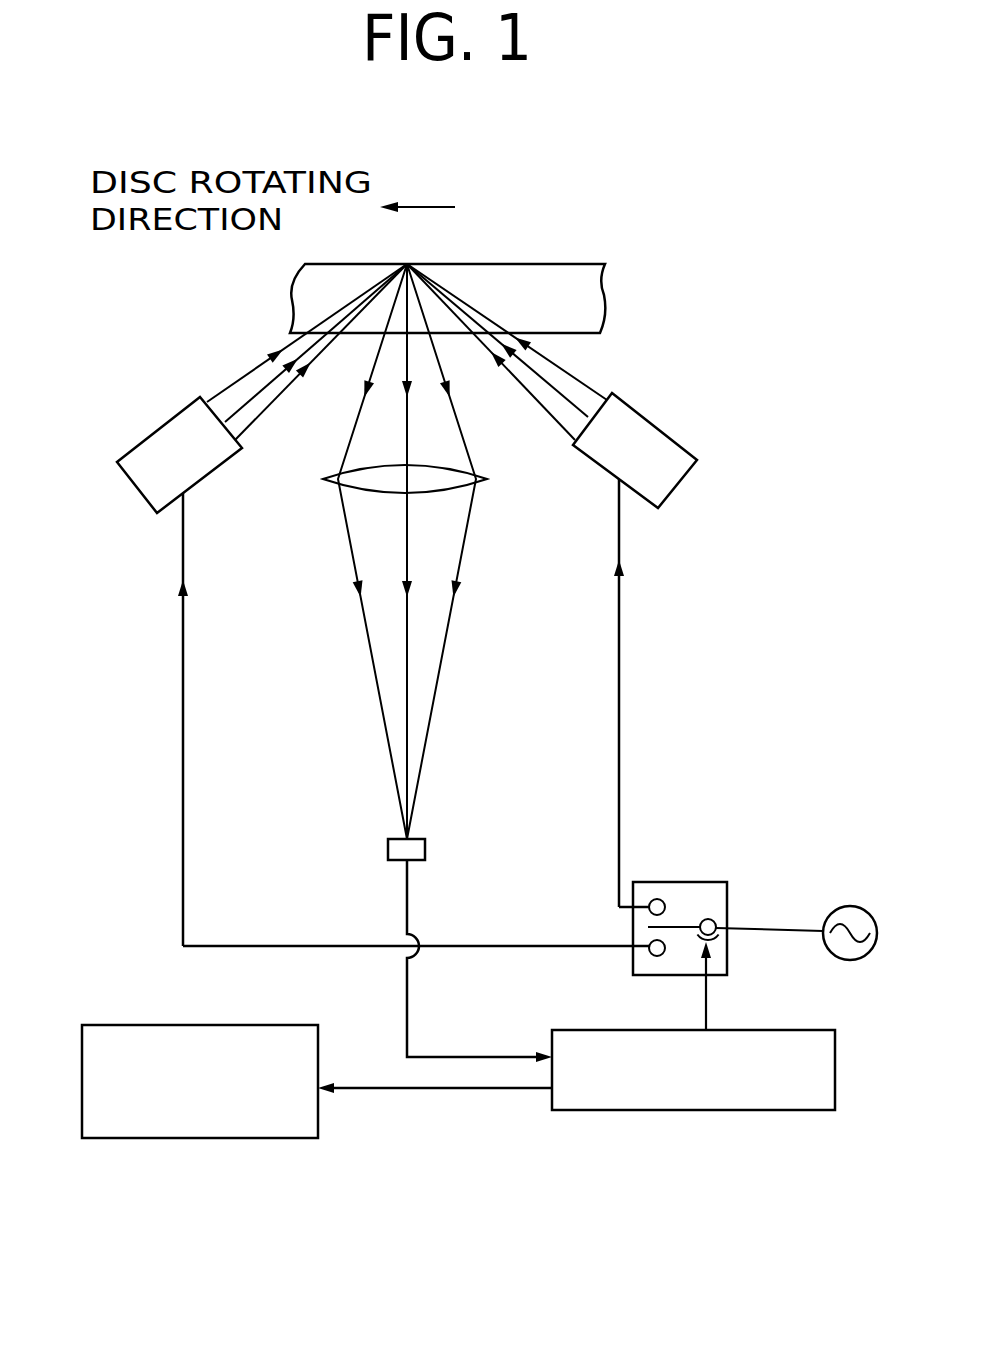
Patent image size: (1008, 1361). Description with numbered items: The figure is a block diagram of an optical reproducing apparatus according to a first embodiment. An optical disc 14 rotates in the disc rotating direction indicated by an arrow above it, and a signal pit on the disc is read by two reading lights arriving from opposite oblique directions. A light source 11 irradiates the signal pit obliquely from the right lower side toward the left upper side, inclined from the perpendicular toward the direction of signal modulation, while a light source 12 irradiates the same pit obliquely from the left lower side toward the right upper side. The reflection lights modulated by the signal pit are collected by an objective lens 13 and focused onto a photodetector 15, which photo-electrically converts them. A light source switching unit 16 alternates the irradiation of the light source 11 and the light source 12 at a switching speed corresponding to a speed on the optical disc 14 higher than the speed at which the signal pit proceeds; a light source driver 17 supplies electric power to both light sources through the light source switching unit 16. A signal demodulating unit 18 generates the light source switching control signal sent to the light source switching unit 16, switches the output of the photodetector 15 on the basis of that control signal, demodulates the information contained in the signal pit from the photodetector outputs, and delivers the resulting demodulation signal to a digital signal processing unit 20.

The light source 11 is at (677, 483).
The light source 12 is at (215, 472).
The objective lens 13 is at (487, 480).
The optical disc 14 is at (573, 264).
The photodetector 15 is at (420, 835).
The light source switching unit 16 is at (677, 882).
The light source driver 17 is at (845, 905).
The signal demodulating unit 18 is at (628, 1110).
The digital signal processing unit 20 is at (175, 1138).